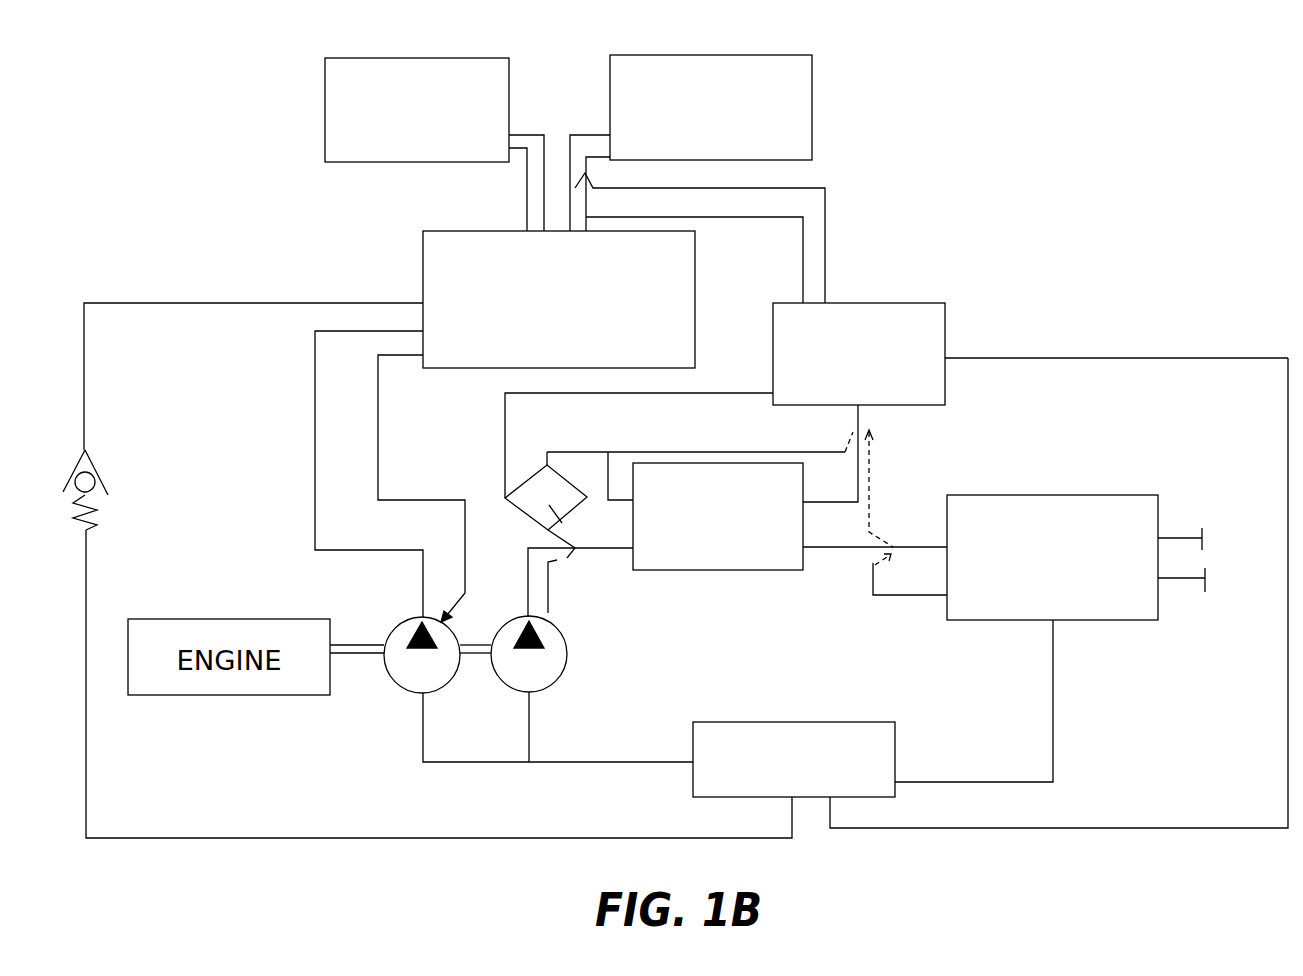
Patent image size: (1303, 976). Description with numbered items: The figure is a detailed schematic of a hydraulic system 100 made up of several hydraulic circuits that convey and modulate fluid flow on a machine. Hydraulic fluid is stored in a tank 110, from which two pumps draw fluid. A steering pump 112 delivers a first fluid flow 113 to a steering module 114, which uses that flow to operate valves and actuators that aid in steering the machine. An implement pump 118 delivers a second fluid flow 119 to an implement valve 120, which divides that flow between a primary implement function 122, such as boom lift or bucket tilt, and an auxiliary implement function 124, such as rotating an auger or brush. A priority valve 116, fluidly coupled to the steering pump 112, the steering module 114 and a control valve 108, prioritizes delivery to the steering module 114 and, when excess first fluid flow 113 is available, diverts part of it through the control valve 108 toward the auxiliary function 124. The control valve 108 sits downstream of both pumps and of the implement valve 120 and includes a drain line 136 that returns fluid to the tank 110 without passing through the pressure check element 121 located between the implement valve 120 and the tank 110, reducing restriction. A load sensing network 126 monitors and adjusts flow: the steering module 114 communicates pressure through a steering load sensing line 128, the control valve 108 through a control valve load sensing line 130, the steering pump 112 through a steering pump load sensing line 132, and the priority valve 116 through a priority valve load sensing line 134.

The hydraulic system 100 is at (178, 60).
The control valve 108 is at (892, 303).
The tank 110 is at (843, 722).
The steering pump 112 is at (533, 665).
The first fluid flow 113 is at (526, 583).
The steering module 114 is at (1097, 495).
The priority valve 116 is at (733, 570).
The implement pump 118 is at (413, 672).
The second fluid flow 119 is at (315, 413).
The implement valve 120 is at (423, 265).
The pressure check element 121 is at (97, 470).
The primary implement function 122 is at (325, 113).
The auxiliary implement function 124 is at (812, 103).
The load sensing network 126 is at (562, 522).
The steering load sensing line 128 is at (795, 452).
The control valve load sensing line 130 is at (640, 393).
The steering pump load sensing line 132 is at (548, 583).
The priority valve load sensing line 134 is at (606, 465).
The drain line 136 is at (1078, 358).